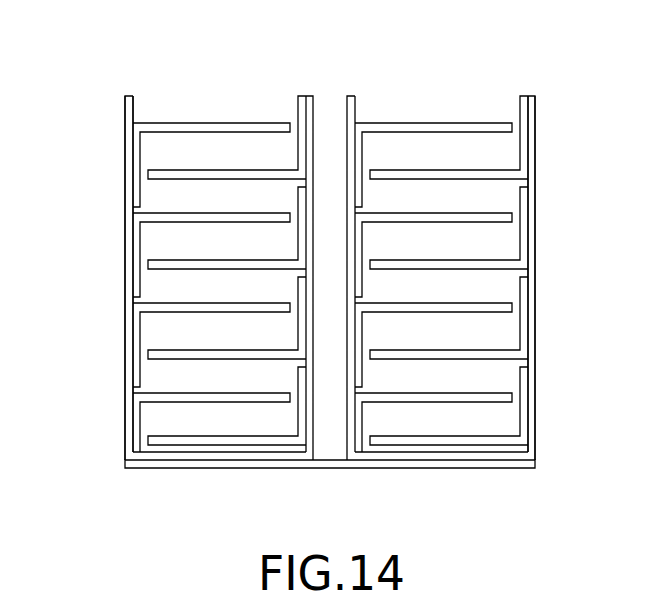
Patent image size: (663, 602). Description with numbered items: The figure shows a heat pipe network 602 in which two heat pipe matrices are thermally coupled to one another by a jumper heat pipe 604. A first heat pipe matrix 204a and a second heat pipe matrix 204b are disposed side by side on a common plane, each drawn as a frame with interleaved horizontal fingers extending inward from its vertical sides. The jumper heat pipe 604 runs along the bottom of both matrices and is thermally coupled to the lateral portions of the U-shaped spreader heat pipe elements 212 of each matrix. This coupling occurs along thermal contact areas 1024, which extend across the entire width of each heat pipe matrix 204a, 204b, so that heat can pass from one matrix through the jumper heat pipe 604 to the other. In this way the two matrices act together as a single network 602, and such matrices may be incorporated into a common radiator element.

The heat pipe network 602 is at (332, 45).
The first heat pipe matrix 204a is at (186, 87).
The second heat pipe matrix 204b is at (444, 87).
The U-shaped spreader heat pipe element 212 is at (125, 385).
The thermal contact area 1024 is at (242, 455).
The jumper heat pipe 604 is at (355, 462).